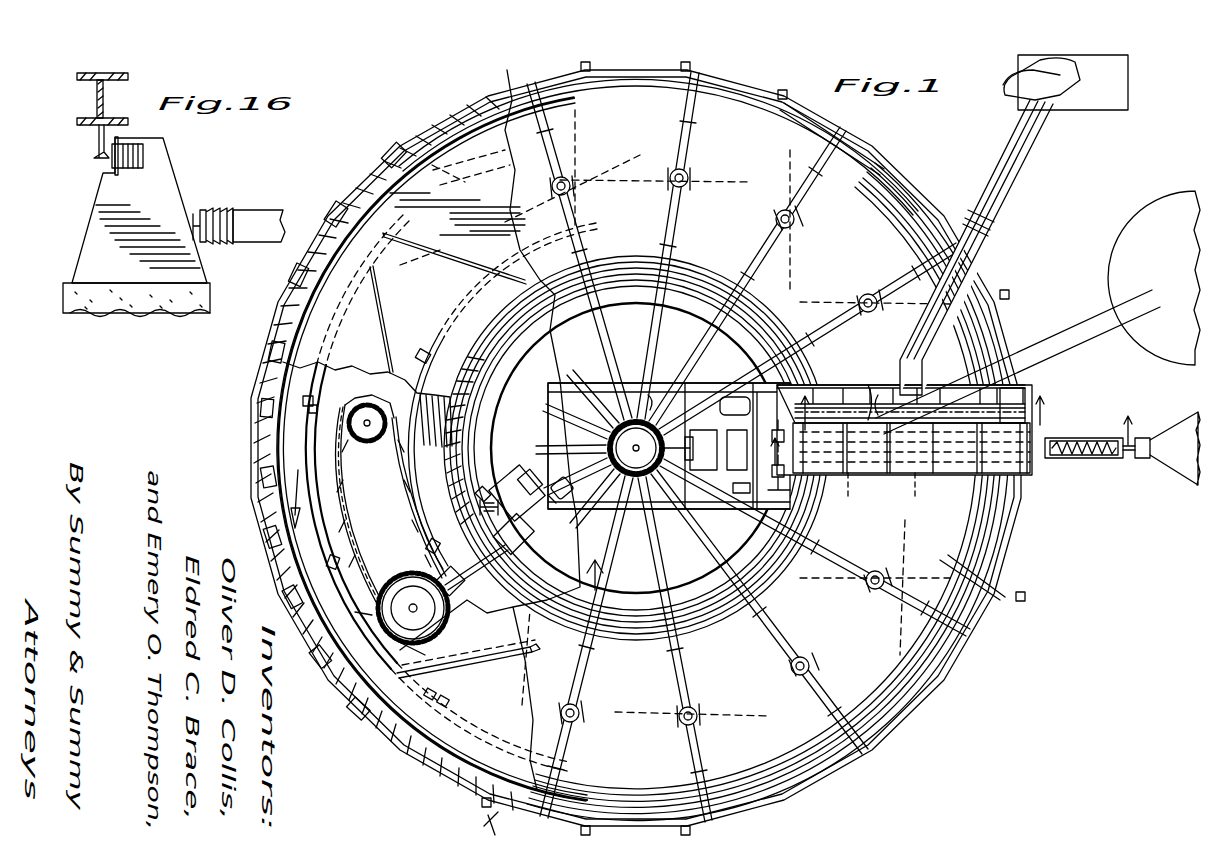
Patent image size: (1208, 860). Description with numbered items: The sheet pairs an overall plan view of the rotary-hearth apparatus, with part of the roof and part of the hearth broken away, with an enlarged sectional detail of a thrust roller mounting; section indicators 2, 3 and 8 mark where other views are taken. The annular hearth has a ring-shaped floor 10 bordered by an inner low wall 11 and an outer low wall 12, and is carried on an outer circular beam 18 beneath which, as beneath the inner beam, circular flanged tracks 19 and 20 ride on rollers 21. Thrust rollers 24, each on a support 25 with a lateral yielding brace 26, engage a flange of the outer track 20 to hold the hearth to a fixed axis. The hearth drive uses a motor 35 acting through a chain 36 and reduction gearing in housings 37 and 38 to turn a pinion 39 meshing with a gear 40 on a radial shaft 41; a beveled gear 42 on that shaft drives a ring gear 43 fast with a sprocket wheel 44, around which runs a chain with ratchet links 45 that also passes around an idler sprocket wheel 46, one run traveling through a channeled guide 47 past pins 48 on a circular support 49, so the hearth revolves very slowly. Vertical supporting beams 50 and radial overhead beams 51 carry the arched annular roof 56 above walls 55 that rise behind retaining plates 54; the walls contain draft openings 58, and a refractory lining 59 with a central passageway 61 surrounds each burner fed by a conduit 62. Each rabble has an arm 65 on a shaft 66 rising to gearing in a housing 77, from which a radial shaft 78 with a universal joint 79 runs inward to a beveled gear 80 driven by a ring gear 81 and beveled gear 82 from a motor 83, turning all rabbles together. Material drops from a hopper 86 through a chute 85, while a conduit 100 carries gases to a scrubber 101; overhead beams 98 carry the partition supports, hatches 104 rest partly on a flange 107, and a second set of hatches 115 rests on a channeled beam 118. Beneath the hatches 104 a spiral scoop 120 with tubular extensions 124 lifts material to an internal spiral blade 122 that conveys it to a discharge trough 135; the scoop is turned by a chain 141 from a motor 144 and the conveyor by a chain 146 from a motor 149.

In FIG. 1, the section line 2 is at (540, 701).
In FIG. 1, the section line / discharge hopper 3 is at (980, 448).
In FIG. 1, the section line 8 is at (923, 413).
In FIG. 1, the ring-shaped floor 10 is at (262, 318).
In FIG. 1, the inner low wall 11 is at (490, 324).
In FIG. 1, the outer low wall 12 is at (330, 266).
In FIG. 16, the outer circular beam 18 is at (95, 96).
In FIG. 1, the inner circular flanged track 19 is at (435, 413).
In FIG. 16, the outer circular flanged track 20 is at (98, 138).
In FIG. 1, the outer circular flanged track 20 is at (315, 432).
In FIG. 1, the rollers 21 is at (420, 350).
In FIG. 16, the thrust rollers 24 is at (110, 160).
In FIG. 1, the thrust rollers 24 is at (440, 170).
In FIG. 16, the support 25 is at (100, 212).
In FIG. 16, the lateral yielding brace 26 is at (240, 212).
In FIG. 1, the motor 35 is at (562, 480).
In FIG. 1, the chain 36 is at (559, 505).
In FIG. 1, the housing 37 is at (528, 472).
In FIG. 1, the housing 38 is at (505, 478).
In FIG. 1, the pinion 39 is at (484, 520).
In FIG. 1, the gear 40 is at (527, 530).
In FIG. 1, the shaft 41 is at (482, 562).
In FIG. 1, the beveled gear 42 is at (450, 570).
In FIG. 1, the ring gear 43 is at (448, 625).
In FIG. 1, the sprocket wheel 44 is at (415, 575).
In FIG. 1, the ratchet links 45 is at (342, 502).
In FIG. 1, the idler sprocket wheel 46 is at (362, 444).
In FIG. 1, the channeled guide 47 is at (340, 482).
In FIG. 1, the pins 48 is at (355, 612).
In FIG. 1, the circular support 49 is at (330, 538).
In FIG. 1, the supporting beams 50 is at (690, 60).
In FIG. 1, the overhead beams 51 is at (555, 100).
In FIG. 1, the retaining plate 54 is at (262, 542).
In FIG. 1, the wall 55 is at (278, 500).
In FIG. 1, the arched annular roof 56 is at (820, 110).
In FIG. 1, the draft openings 58 is at (548, 325).
In FIG. 1, the lining 59 is at (305, 290).
In FIG. 1, the central passageway 61 is at (410, 200).
In FIG. 1, the conduit 62 is at (382, 160).
In FIG. 1, the rabble arm 65 is at (580, 138).
In FIG. 1, the shaft 66 is at (465, 664).
In FIG. 1, the housing 77 is at (618, 166).
In FIG. 1, the shaft 78 is at (702, 658).
In FIG. 1, the universal joint 79 is at (630, 244).
In FIG. 1, the beveled gear 80 is at (645, 405).
In FIG. 1, the ring gear 81 is at (636, 448).
In FIG. 1, the beveled gear 82 is at (639, 459).
In FIG. 1, the motor 83 is at (742, 395).
In FIG. 1, the chute 85 is at (1055, 340).
In FIG. 1, the bin or hopper 86 is at (1158, 352).
In FIG. 1, the overhead beams 98 is at (878, 385).
In FIG. 1, the conduit 100 is at (928, 360).
In FIG. 1, the scrubber 101 is at (1128, 93).
In FIG. 1, the hatches 104 is at (940, 475).
In FIG. 1, the flange 107 is at (870, 475).
In FIG. 1, the hatches 115 is at (1020, 385).
In FIG. 1, the channeled beam 118 is at (845, 385).
In FIG. 1, the spiral scoop 120 is at (928, 496).
In FIG. 1, the spiral blade 122 is at (1098, 438).
In FIG. 1, the tube 124 is at (858, 496).
In FIG. 1, the trough 135 is at (1052, 460).
In FIG. 1, the chain 141 is at (786, 436).
In FIG. 1, the motor 144 is at (745, 380).
In FIG. 1, the chain 146 is at (786, 465).
In FIG. 1, the motor 149 is at (733, 488).